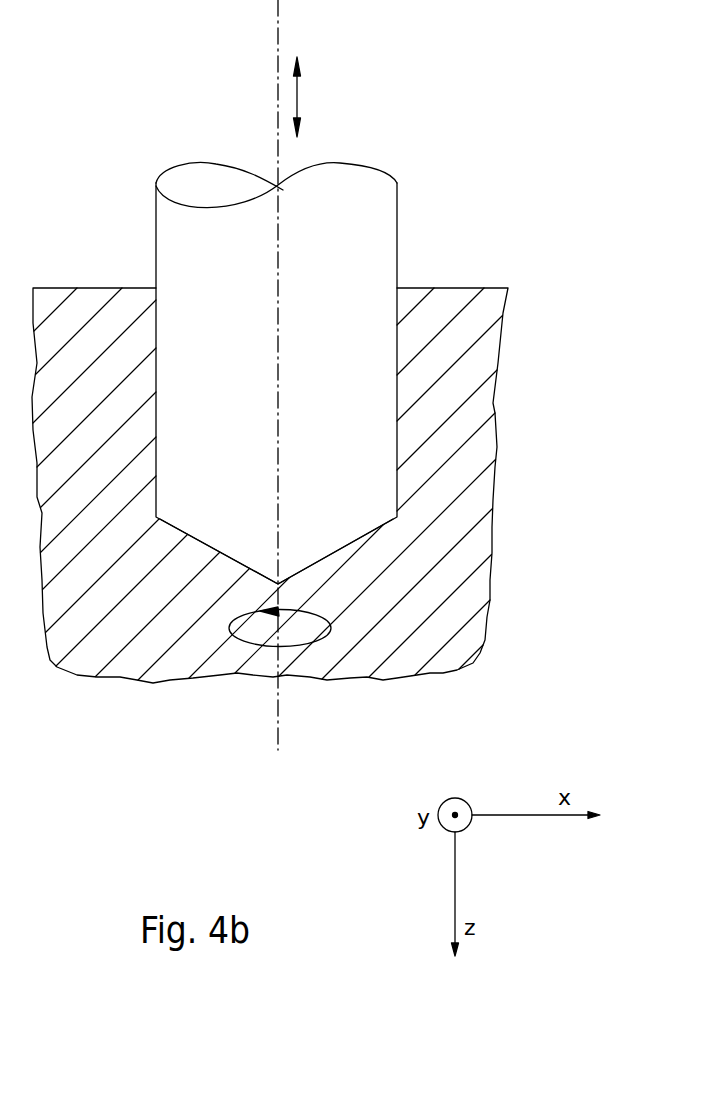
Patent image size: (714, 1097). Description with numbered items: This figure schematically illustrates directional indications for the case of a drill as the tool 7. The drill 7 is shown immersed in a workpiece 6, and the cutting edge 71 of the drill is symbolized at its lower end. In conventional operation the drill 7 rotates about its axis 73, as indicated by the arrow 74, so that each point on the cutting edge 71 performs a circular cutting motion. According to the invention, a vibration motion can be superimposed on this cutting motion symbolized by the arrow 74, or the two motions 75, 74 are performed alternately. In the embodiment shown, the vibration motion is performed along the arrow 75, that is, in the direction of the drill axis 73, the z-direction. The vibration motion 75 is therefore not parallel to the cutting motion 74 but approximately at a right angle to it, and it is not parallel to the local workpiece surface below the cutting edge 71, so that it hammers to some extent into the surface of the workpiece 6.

The workpiece 6 is at (87, 300).
The drill 7 is at (388, 208).
The cutting edge 71 is at (356, 538).
The drill axis 73 is at (279, 20).
The cutting motion arrow 74 is at (250, 646).
The vibration motion arrow 75 is at (300, 95).